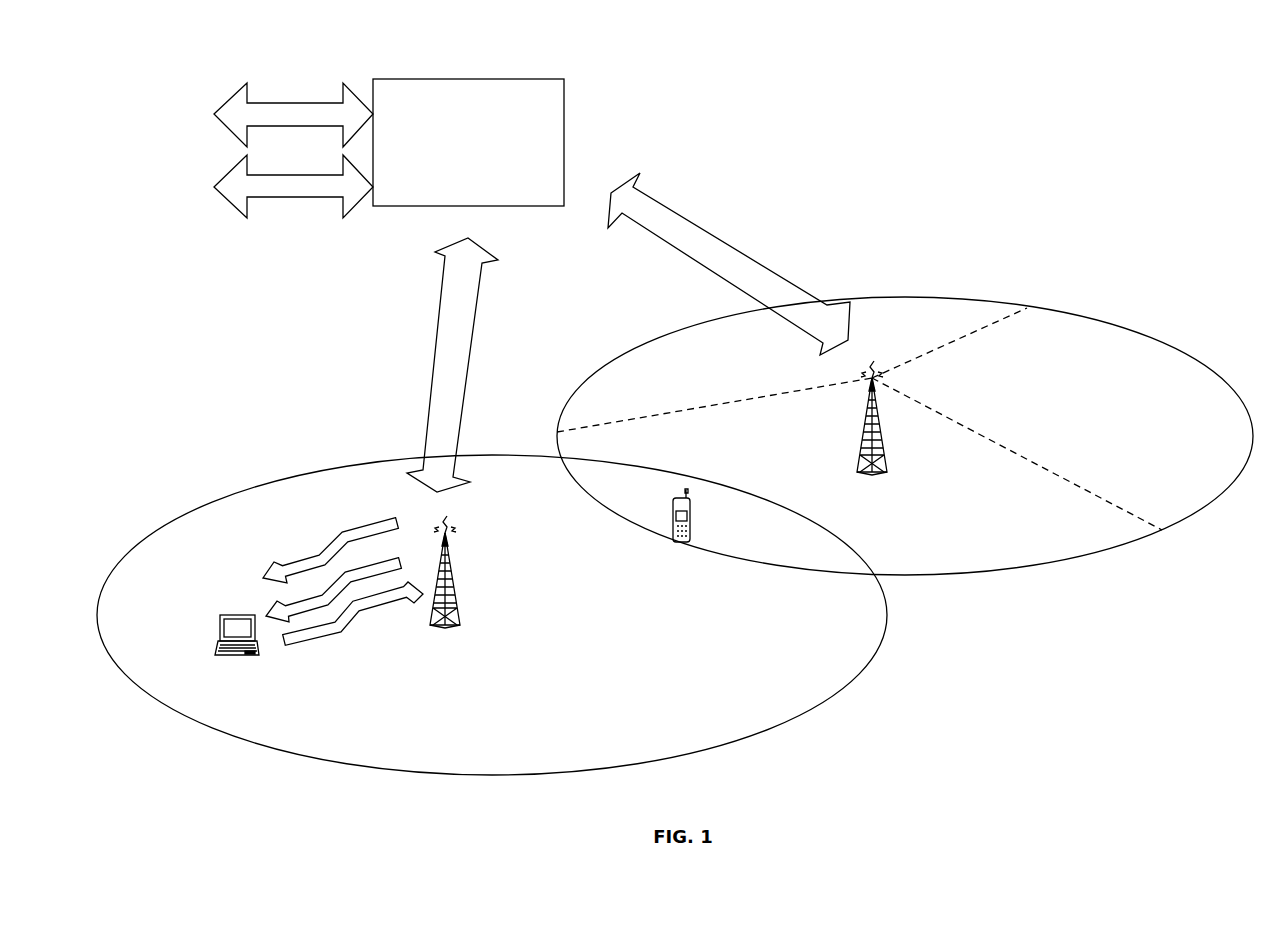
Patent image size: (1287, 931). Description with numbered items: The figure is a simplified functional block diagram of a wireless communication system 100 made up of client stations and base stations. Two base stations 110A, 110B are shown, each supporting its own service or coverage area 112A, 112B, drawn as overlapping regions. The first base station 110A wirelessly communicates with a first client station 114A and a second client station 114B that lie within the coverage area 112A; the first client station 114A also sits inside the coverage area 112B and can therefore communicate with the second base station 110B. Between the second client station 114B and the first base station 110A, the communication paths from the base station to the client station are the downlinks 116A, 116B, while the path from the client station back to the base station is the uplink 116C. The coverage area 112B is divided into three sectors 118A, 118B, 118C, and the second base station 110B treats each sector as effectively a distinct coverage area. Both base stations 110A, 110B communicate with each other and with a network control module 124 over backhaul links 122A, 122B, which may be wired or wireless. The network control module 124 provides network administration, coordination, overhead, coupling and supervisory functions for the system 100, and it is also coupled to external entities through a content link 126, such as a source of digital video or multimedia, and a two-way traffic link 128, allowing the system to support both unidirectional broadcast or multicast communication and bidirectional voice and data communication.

The wireless communication system 100 is at (1040, 74).
The first base station 110A is at (495, 575).
The second base station 110B is at (925, 433).
The coverage area 112A is at (213, 495).
The coverage area 112B is at (1117, 323).
The first client station 114A is at (722, 518).
The second client station 114B is at (220, 633).
The downlink 116A is at (362, 528).
The downlink 116B is at (272, 597).
The uplink 116C is at (347, 632).
The sector 118A is at (989, 549).
The sector 118B is at (803, 352).
The sector 118C is at (1208, 437).
The backhaul link 122A is at (472, 338).
The backhaul link 122B is at (790, 255).
The network control module 124 is at (497, 78).
The content link 126 is at (240, 90).
The two-way traffic link 128 is at (230, 170).